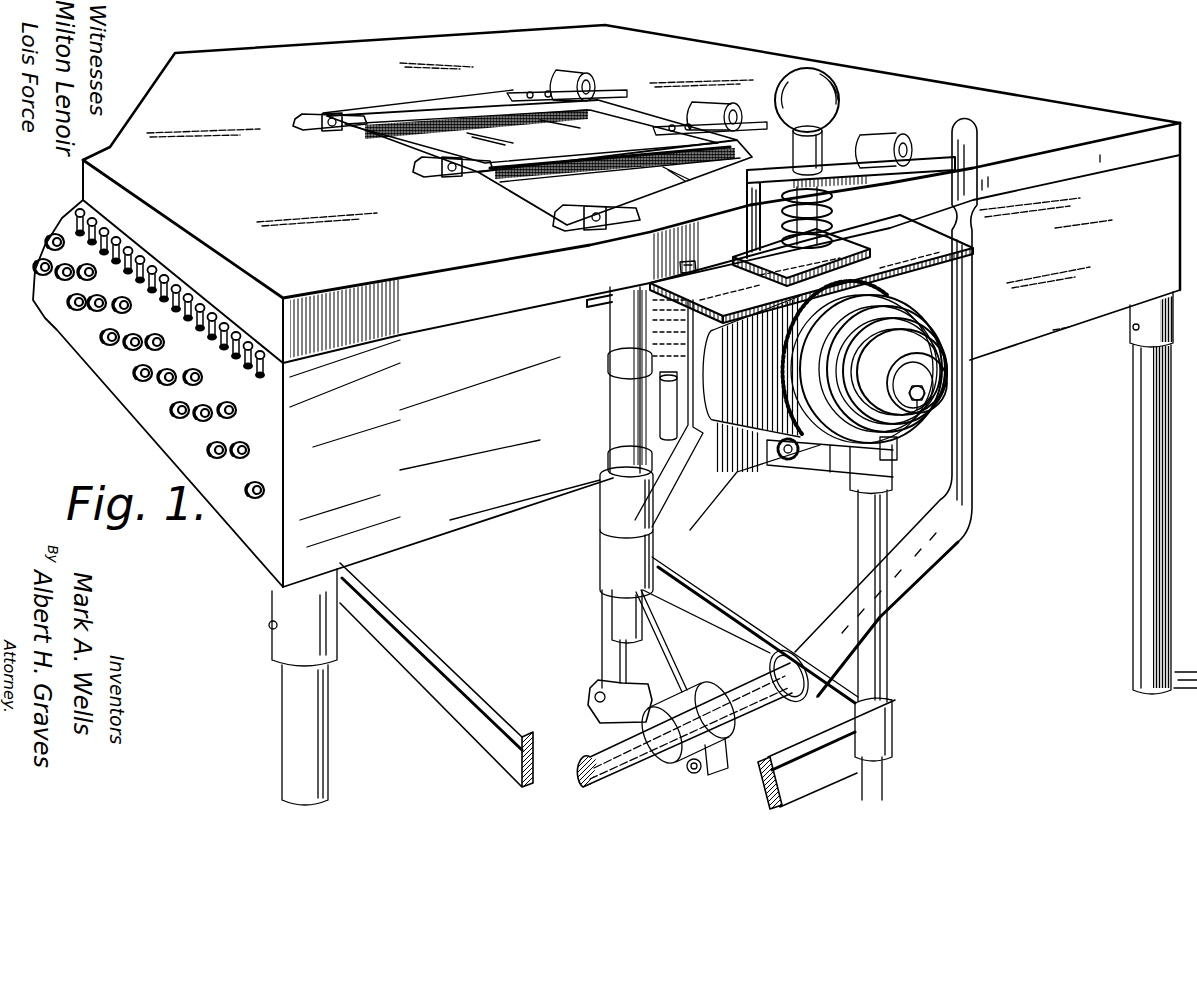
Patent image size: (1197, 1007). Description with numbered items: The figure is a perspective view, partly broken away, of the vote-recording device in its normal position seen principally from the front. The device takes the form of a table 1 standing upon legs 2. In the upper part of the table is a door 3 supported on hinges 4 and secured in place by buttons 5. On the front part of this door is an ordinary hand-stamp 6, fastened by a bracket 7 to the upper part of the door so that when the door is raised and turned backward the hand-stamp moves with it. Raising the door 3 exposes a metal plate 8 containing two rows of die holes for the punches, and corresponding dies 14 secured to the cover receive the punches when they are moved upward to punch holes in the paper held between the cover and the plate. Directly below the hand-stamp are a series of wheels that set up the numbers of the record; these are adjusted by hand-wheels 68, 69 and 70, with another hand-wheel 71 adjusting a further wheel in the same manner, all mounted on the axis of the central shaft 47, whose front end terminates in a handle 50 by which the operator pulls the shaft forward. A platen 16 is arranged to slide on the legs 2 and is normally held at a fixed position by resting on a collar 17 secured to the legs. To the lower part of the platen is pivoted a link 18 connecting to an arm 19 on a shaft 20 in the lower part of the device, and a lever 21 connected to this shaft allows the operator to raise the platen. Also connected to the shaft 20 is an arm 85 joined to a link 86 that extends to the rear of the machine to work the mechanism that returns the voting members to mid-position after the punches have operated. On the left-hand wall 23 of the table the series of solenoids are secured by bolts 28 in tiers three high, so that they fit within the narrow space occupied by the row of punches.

The table 1 is at (606, 417).
The legs 2 is at (1136, 525).
The door 3 is at (537, 157).
The hinges 4 is at (732, 116).
The buttons 5 is at (607, 223).
The hand-stamp 6 is at (840, 110).
The bracket 7 is at (752, 190).
The metal plate 8 is at (780, 269).
The dies 14 is at (681, 270).
The platen 16 is at (600, 518).
The collar 17 is at (613, 567).
The link 18 is at (608, 648).
The arm 19 is at (620, 718).
The shaft 20 is at (622, 772).
The lever 21 is at (962, 482).
The left-hand wall 23 is at (112, 378).
The bolts 28 is at (250, 494).
The central shaft 47 is at (926, 395).
The handle 50 is at (945, 380).
The hand-wheel 68 is at (913, 322).
The hand-wheel 69 is at (905, 315).
The hand-wheel 70 is at (898, 302).
The hand-wheel 71 is at (884, 300).
The arm 85 is at (730, 745).
The link 86 is at (677, 683).